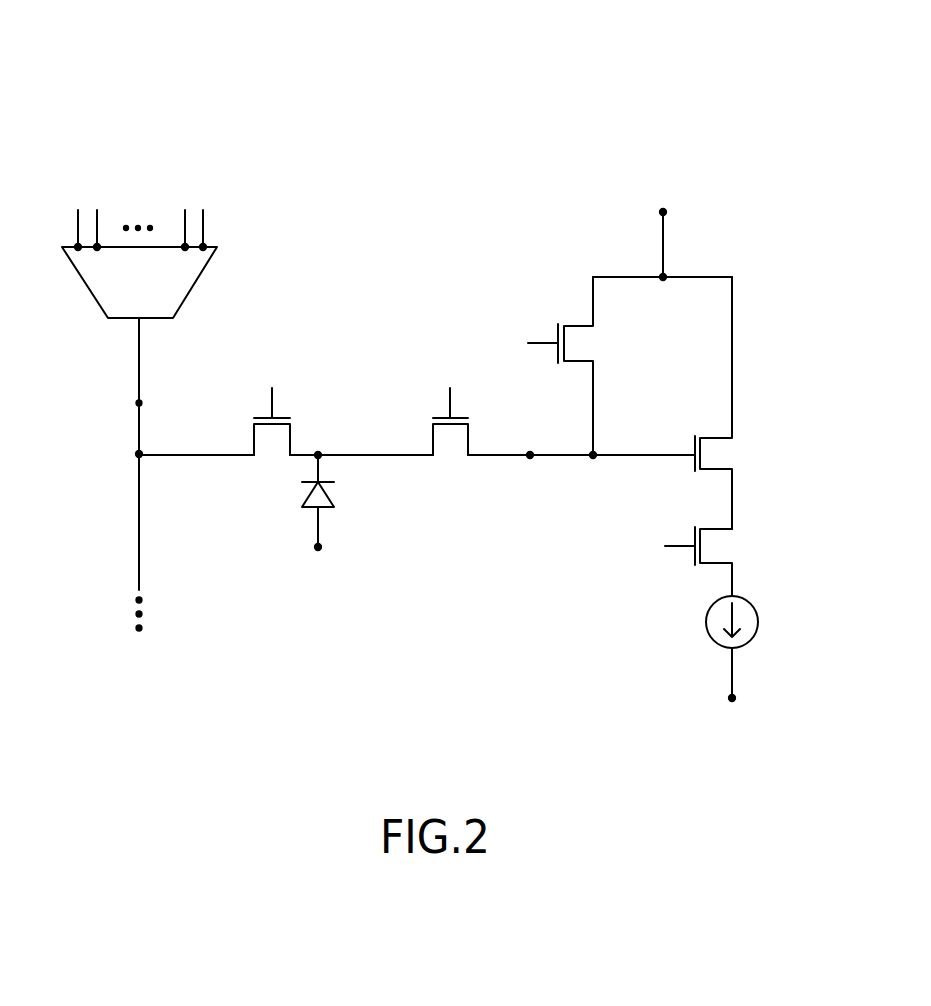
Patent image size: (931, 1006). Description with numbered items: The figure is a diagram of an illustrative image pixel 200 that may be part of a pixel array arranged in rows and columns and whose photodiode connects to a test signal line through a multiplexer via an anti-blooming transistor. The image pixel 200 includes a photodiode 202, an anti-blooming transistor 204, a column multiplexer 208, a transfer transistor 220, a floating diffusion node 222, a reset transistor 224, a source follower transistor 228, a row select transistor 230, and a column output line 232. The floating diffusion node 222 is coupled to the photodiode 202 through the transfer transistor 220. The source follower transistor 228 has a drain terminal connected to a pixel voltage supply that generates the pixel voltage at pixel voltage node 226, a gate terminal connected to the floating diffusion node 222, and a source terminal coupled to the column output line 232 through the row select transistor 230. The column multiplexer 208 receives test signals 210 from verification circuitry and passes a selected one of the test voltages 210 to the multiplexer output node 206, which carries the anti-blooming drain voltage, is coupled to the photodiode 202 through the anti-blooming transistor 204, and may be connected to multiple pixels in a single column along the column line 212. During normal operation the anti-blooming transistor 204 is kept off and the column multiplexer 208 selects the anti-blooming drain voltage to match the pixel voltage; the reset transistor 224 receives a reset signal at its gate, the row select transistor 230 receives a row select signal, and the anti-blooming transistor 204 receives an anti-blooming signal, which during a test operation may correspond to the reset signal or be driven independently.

The image pixel 200 is at (651, 119).
The photodiode 202 is at (310, 508).
The anti-blooming transistor 204 is at (292, 440).
The multiplexer output node 206 is at (143, 403).
The column multiplexer 208 is at (196, 283).
The test signals 210 is at (205, 222).
The anti-blooming drain line 212 is at (139, 536).
The transfer transistor 220 is at (433, 432).
The floating diffusion node 222 is at (531, 460).
The reset transistor 224 is at (578, 326).
The pixel voltage node 226 is at (666, 212).
The source follower transistor 228 is at (723, 436).
The row select transistor 230 is at (720, 567).
The column output line 232 is at (735, 581).